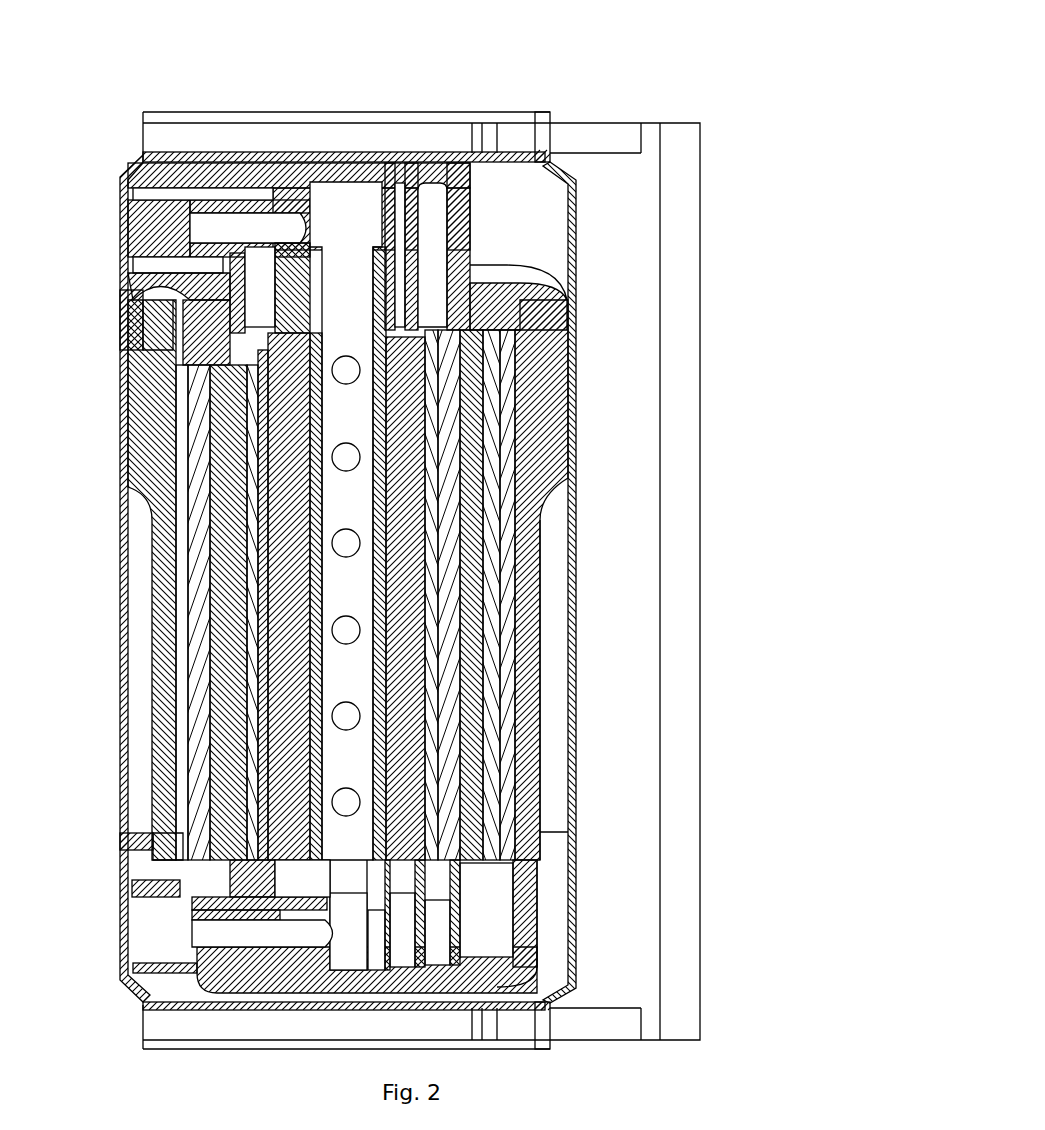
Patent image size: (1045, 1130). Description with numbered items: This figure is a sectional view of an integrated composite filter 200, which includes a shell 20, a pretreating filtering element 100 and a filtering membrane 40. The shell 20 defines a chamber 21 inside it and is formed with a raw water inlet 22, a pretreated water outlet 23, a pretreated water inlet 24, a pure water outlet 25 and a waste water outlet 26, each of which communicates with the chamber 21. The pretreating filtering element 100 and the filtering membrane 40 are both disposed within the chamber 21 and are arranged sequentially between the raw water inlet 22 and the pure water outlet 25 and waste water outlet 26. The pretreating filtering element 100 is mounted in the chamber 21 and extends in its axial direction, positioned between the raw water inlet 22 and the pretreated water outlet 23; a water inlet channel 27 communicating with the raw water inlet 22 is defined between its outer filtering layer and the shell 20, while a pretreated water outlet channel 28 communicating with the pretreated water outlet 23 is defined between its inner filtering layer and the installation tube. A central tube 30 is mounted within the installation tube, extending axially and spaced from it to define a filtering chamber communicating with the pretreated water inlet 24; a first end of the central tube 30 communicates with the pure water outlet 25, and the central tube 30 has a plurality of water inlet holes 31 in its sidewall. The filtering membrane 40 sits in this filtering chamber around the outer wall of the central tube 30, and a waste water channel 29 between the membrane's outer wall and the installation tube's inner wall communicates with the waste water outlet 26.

The integrated composite filter 200 is at (372, 68).
The shell 20 is at (545, 650).
The chamber 21 is at (488, 880).
The raw water inlet 22 is at (143, 865).
The pretreated water outlet 23 is at (210, 905).
The pretreated water inlet 24 is at (210, 935).
The pure water outlet 25 is at (215, 228).
The waste water outlet 26 is at (232, 265).
The water inlet channel 27 is at (183, 623).
The pretreated water outlet channel 28 is at (190, 543).
The waste water channel 29 is at (267, 403).
The central tube 30 is at (398, 520).
The water inlet holes 31 is at (363, 455).
The filtering membrane 40 is at (400, 582).
The pretreating filtering element 100 is at (183, 710).